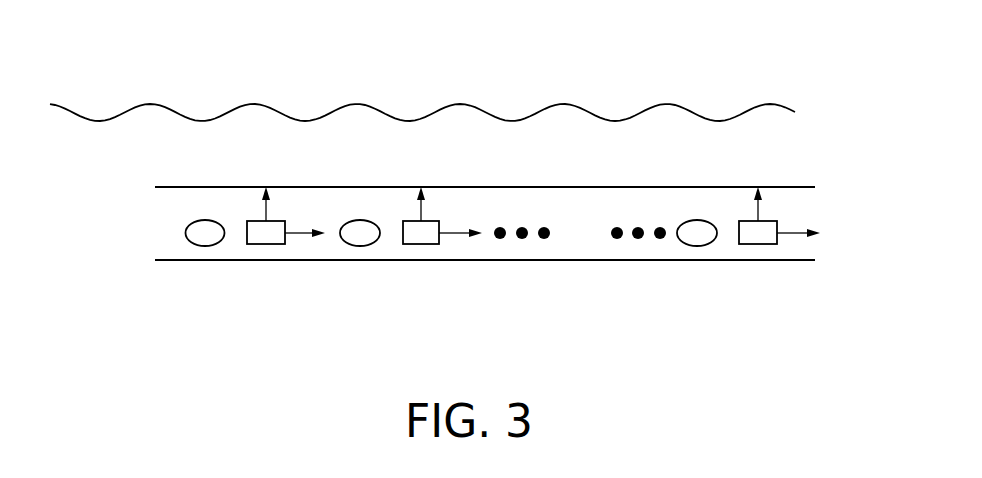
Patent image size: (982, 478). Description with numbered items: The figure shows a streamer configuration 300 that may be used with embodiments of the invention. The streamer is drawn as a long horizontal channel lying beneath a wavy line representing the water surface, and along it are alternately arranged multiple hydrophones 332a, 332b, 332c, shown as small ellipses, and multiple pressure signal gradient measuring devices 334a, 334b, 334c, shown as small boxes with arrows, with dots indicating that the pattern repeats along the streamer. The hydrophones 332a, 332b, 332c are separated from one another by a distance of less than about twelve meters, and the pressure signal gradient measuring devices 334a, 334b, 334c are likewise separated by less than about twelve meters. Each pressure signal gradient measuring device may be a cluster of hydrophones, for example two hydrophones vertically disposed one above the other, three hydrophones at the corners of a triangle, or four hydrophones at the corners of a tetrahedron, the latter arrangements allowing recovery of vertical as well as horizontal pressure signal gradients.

The streamer configuration 300 is at (816, 81).
The hydrophone 332a is at (186, 229).
The hydrophone 332b is at (360, 246).
The hydrophone 332c is at (697, 246).
The pressure signal gradient measuring device 334a is at (266, 244).
The pressure signal gradient measuring device 334b is at (418, 244).
The pressure signal gradient measuring device 334c is at (762, 244).